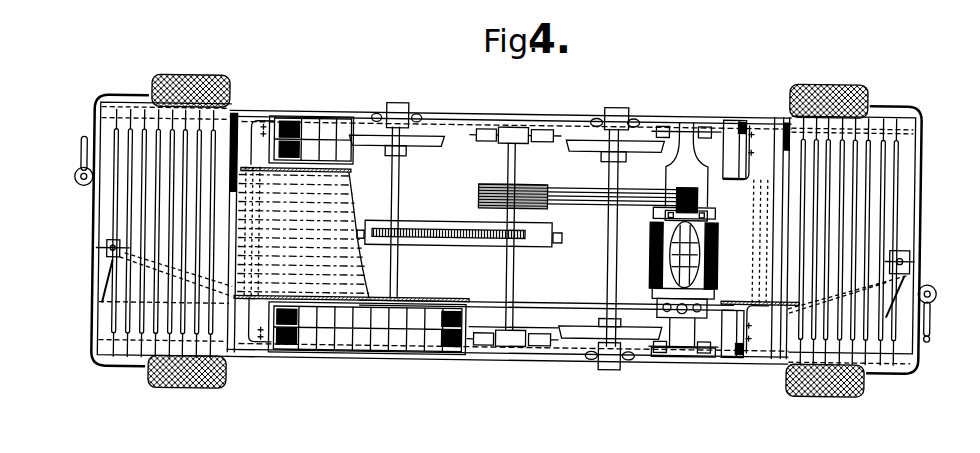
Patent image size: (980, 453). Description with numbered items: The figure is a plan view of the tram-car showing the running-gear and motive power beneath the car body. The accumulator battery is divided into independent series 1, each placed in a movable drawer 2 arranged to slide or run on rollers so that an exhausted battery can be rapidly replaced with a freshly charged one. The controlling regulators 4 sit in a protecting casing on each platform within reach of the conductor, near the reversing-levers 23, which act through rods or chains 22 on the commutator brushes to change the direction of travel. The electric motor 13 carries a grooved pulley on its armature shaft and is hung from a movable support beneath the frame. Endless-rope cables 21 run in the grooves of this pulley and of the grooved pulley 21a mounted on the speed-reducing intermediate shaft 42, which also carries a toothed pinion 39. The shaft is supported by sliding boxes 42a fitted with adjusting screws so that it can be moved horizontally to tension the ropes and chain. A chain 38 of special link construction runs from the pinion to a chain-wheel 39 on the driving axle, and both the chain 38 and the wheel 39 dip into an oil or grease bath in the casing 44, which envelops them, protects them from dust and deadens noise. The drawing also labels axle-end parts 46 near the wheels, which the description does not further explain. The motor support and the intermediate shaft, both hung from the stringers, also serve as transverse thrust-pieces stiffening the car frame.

The battery series 1 is at (367, 235).
The movable drawer 2 is at (300, 121).
The regulator 4 is at (910, 250).
The electric motor 13 is at (668, 250).
The endless-rope cables 21 is at (563, 187).
The grooved pulley 21a is at (519, 183).
The rods or chains 22 is at (537, 338).
The reversing-lever 23 is at (113, 268).
The chain 38 is at (430, 231).
The toothed pinion 39 is at (378, 230).
The intermediate shaft 42 is at (512, 273).
The sliding boxes 42a is at (509, 130).
The oil-reservoir casing 44 is at (552, 232).
The gear wheel 46 is at (417, 140).